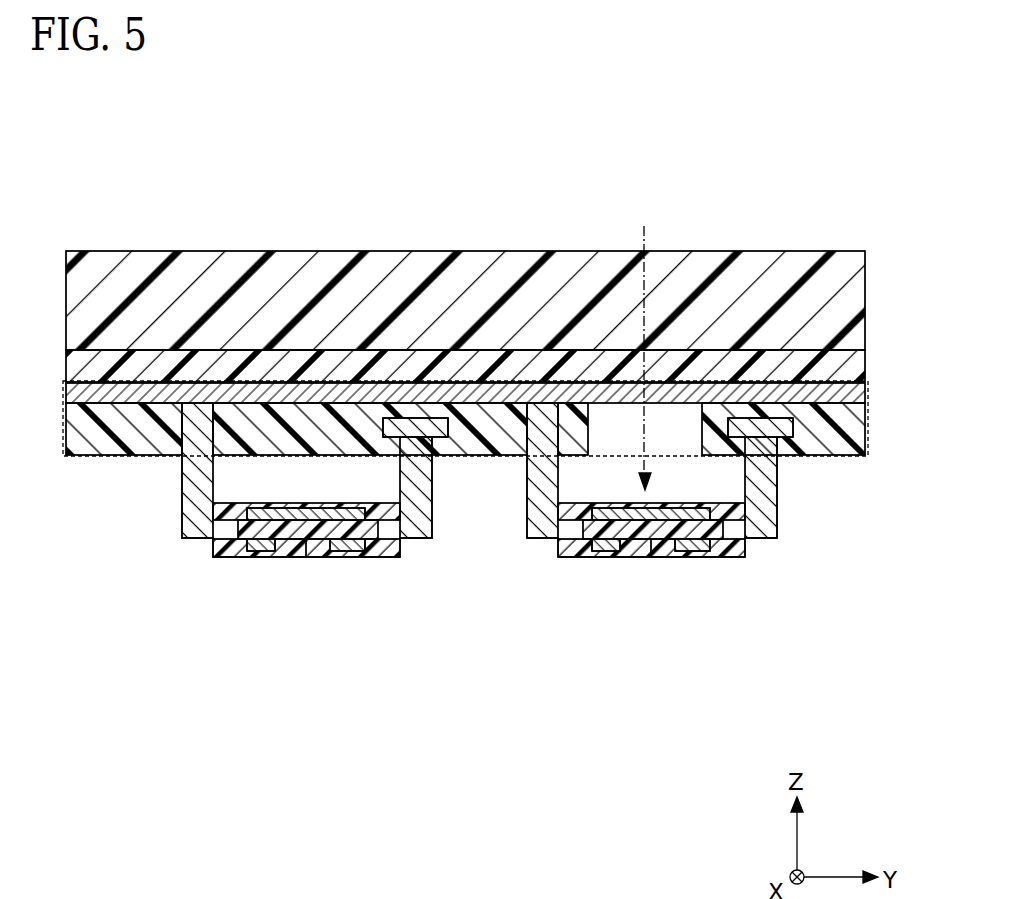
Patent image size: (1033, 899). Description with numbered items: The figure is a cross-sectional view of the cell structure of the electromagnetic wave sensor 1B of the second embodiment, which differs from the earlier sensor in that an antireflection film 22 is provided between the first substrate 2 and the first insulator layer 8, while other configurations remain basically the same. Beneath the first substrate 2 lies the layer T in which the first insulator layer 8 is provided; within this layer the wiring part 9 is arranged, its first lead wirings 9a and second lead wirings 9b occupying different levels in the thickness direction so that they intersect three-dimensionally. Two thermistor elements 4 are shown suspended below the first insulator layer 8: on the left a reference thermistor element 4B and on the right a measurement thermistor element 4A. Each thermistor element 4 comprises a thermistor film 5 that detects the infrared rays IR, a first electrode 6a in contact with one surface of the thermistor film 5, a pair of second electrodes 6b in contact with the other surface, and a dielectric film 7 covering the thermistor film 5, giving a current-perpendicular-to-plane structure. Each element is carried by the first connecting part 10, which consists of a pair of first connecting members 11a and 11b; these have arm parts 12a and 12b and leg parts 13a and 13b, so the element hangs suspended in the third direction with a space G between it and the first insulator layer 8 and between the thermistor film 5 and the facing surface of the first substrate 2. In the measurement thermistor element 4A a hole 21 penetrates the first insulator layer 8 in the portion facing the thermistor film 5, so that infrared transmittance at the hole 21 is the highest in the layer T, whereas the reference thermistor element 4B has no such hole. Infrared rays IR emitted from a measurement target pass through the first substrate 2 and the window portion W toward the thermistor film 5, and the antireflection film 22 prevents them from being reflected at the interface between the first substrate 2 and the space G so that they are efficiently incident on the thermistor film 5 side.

The electromagnetic wave sensor 1B is at (112, 115).
The first substrate 2 is at (848, 302).
The antireflection film 22 is at (848, 367).
The layer T is at (870, 398).
The first insulator layer 8 is at (852, 425).
The wiring part 9 is at (493, 368).
The second lead wiring 9b is at (413, 385).
The first lead wiring 9a is at (437, 432).
The hole 21 is at (702, 423).
The window portion W is at (614, 398).
The infrared rays IR is at (642, 442).
The space G is at (228, 474).
The dielectric film 7 is at (307, 503).
The first electrode 6a is at (330, 508).
The second electrode 6b is at (263, 552).
The thermistor film 5 is at (303, 541).
The leg part 13b is at (192, 492).
The arm part 12b is at (237, 556).
The arm part 12a is at (380, 556).
The leg part 13a is at (425, 497).
The first connecting member 11b is at (394, 565).
The first connecting member 11a is at (559, 582).
The first connecting part 10 is at (475, 565).
The reference thermistor element 4B is at (297, 700).
The measurement thermistor element 4A is at (643, 700).
The thermistor element 4 is at (479, 620).